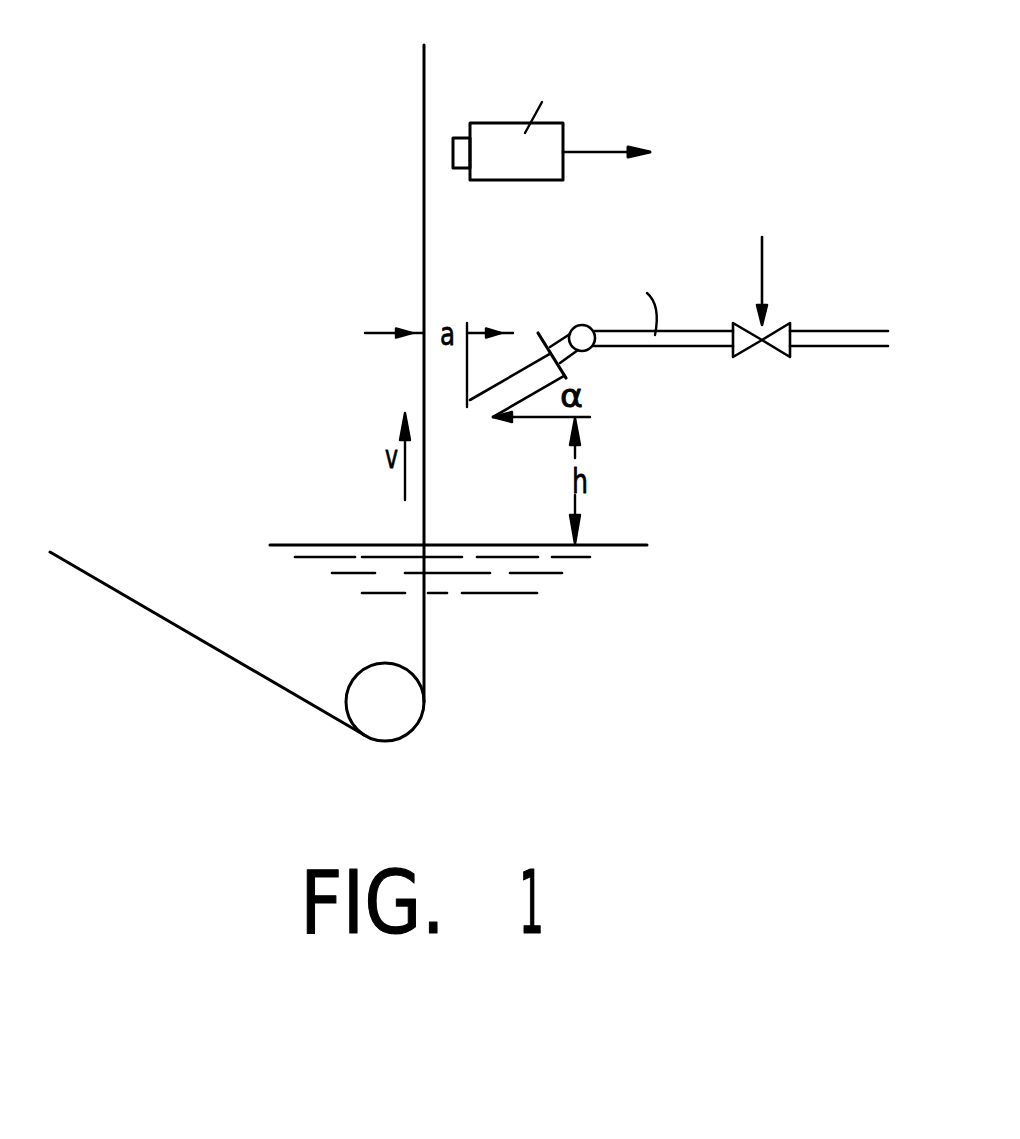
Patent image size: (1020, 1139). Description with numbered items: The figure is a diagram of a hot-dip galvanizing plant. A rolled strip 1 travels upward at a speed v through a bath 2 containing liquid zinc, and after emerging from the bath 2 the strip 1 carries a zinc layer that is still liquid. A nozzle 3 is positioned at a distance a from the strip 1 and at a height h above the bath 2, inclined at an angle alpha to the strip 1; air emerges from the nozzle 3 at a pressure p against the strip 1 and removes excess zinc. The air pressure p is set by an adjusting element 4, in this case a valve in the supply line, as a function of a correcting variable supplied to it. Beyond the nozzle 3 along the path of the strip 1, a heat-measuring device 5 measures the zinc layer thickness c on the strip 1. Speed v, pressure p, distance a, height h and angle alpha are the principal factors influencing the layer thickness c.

The rolled strip 1 is at (240, 663).
The bath 2 is at (533, 565).
The nozzle 3 is at (532, 402).
The adjusting element 4 is at (743, 337).
The heat-measuring device 5 is at (518, 168).